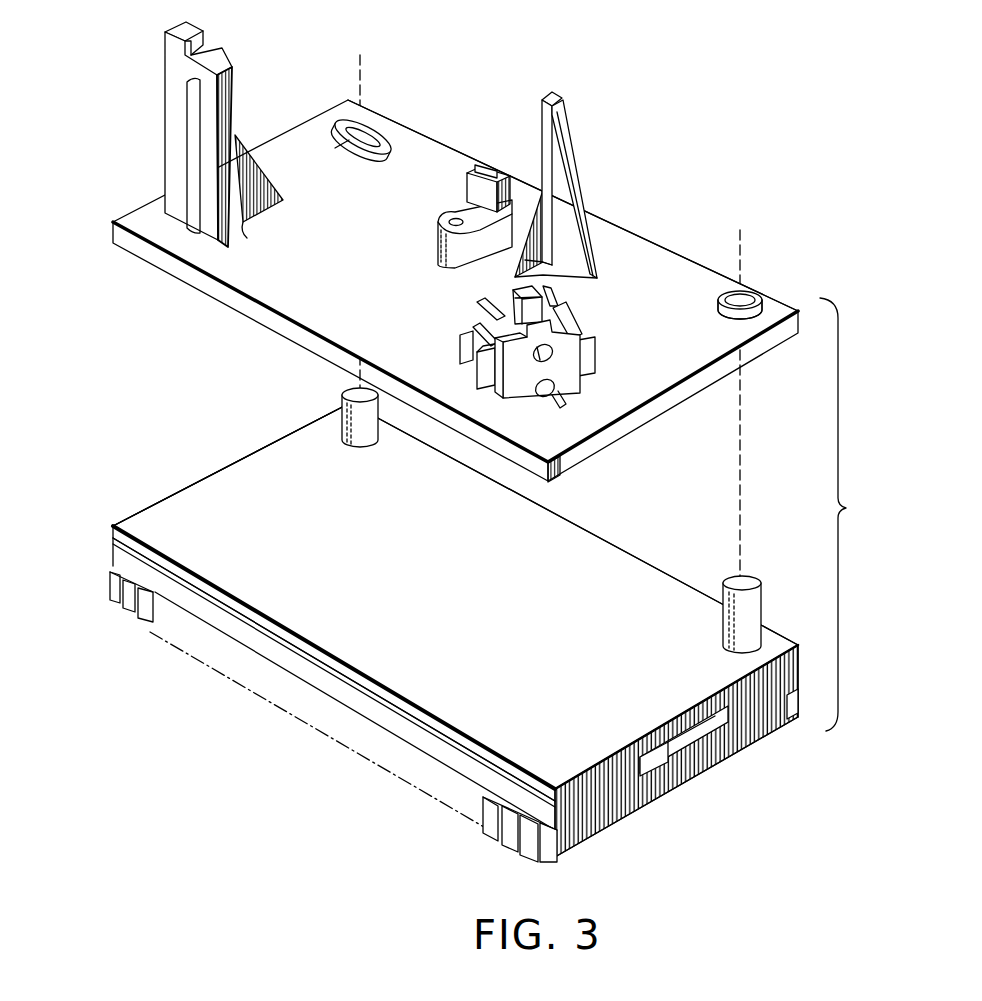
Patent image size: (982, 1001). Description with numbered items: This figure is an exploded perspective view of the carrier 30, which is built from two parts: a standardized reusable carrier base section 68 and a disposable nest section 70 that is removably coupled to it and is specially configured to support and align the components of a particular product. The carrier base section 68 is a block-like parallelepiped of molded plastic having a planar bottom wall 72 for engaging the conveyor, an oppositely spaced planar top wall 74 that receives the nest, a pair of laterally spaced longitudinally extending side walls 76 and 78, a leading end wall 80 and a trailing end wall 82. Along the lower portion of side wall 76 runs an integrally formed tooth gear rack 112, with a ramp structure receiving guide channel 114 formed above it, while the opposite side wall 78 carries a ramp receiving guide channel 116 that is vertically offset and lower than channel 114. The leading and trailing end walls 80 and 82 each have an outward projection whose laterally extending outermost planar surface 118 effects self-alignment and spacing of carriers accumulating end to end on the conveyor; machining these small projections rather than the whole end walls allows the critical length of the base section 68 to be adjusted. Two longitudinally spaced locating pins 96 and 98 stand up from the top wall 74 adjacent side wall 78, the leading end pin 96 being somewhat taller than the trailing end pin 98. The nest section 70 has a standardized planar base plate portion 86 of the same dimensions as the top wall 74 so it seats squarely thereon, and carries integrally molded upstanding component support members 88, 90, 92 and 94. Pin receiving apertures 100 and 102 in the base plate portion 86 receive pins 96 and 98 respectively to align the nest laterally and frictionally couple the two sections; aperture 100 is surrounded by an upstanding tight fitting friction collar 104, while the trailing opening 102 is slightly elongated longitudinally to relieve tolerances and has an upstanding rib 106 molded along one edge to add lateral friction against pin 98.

The carrier 30 is at (846, 514).
The carrier base section 68 is at (802, 646).
The nest section 70 is at (799, 312).
The bottom wall 72 is at (666, 804).
The top wall 74 is at (266, 458).
The side wall 76 is at (318, 660).
The side wall 78 is at (642, 548).
The leading end wall 80 is at (607, 826).
The trailing end wall 82 is at (153, 497).
The base plate portion 86 is at (648, 250).
The component support member 88 is at (213, 58).
The component support member 90 is at (474, 170).
The component support member 92 is at (578, 153).
The component support member 94 is at (573, 337).
The leading end locating pin 96 is at (748, 580).
The trailing end locating pin 98 is at (342, 392).
The pin receiving aperture 100 is at (750, 298).
The pin receiving aperture 102 is at (380, 130).
The friction collar 104 is at (720, 298).
The upstanding rib 106 is at (340, 147).
The tooth gear rack 112 is at (131, 620).
The ramp structure receiving guide channel 114 is at (522, 790).
The ramp receiving guide channel 116 is at (820, 684).
The outermost planar surface 118 is at (700, 756).